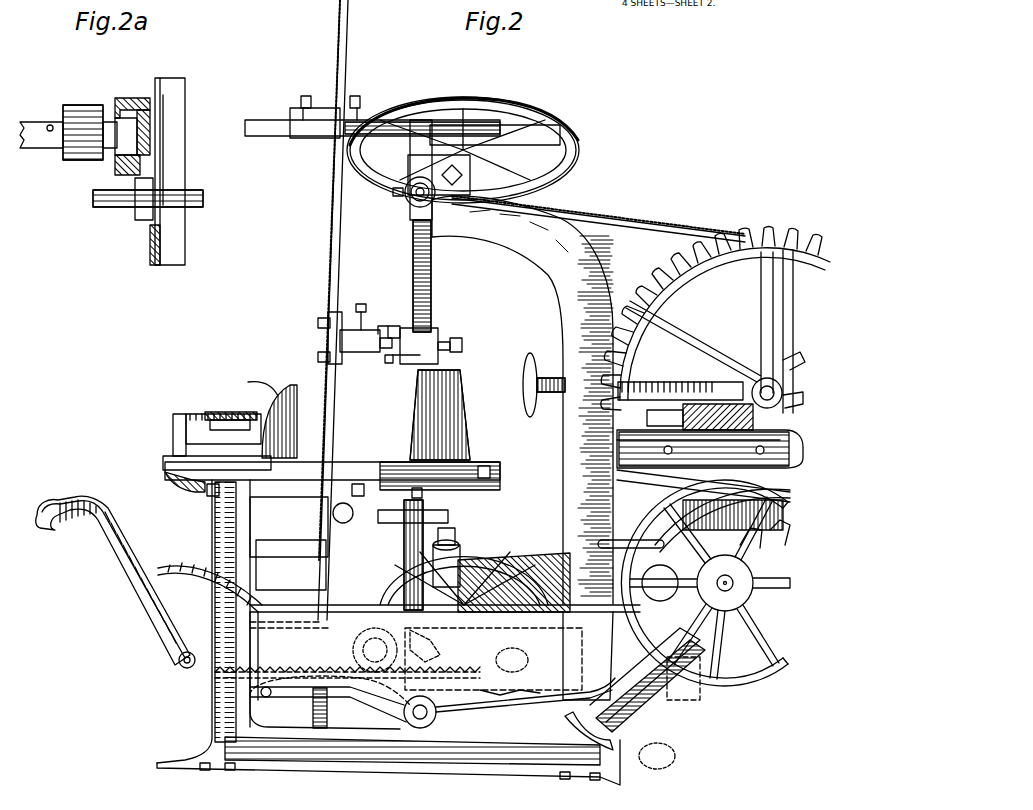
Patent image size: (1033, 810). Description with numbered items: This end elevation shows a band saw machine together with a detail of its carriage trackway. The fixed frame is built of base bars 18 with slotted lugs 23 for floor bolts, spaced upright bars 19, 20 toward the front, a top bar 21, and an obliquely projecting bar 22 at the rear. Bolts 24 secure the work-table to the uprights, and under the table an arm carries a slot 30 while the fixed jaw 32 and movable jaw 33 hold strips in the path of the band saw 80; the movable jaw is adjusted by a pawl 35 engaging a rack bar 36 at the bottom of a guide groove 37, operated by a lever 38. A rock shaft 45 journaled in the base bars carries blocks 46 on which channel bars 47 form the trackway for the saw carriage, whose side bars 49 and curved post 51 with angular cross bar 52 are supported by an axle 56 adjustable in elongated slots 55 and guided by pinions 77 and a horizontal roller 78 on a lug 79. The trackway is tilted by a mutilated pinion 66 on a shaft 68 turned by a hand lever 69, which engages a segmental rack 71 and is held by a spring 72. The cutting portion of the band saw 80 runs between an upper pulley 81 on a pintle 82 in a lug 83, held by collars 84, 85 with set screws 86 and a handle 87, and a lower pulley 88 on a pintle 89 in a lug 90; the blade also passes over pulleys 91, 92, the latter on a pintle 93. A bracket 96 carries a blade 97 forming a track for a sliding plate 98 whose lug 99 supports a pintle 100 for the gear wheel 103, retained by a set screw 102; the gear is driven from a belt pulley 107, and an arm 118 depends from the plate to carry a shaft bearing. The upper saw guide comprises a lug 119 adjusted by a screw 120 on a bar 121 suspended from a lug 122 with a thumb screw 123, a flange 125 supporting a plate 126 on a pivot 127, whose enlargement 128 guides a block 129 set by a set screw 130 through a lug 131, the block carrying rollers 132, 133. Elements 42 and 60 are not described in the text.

In FIG. 2, the base bars 18 is at (375, 770).
In FIG. 2, the upright bar 19 is at (245, 558).
In FIG. 2, the upright bar 20 is at (320, 548).
In FIG. 2, the top bar 21 is at (301, 527).
In FIG. 2, the obliquely projecting bar 22 is at (650, 705).
In FIG. 2, the slotted lugs 23 is at (245, 770).
In FIG. 2, the bolts 24 is at (208, 492).
In FIG. 2, the slot 30 is at (196, 416).
In FIG. 2, the fixed jaw 32 is at (440, 394).
In FIG. 2, the movable jaw 33 is at (276, 382).
In FIG. 2, the pawl 35 is at (236, 418).
In FIG. 2, the rack bar 36 is at (190, 480).
In FIG. 2, the groove 37 is at (258, 502).
In FIG. 2, the lever 38 is at (173, 444).
In FIG. 2, the plate 42 is at (482, 494).
In FIG. 2, the rock shaft 45 is at (420, 728).
In FIG. 2, the blocks 46 is at (490, 700).
In FIG. 2A, the channel bars 47 is at (168, 110).
In FIG. 2, the channel bars 47 is at (700, 718).
In FIG. 2A, the side bars 49 is at (85, 105).
In FIG. 2, the side bars 49 is at (540, 572).
In FIG. 2, the post 51 is at (556, 296).
In FIG. 2, the angular cross bar 52 is at (470, 246).
In FIG. 2, the elongated slots 55 is at (640, 700).
In FIG. 2, the axle 56 is at (582, 666).
In FIG. 2, the shaft 60 is at (624, 538).
In FIG. 2A, the pinion 66 is at (140, 220).
In FIG. 2A, the shaft 68 is at (115, 207).
In FIG. 2, the hand lever 69 is at (80, 496).
In FIG. 2, the segmental rack 71 is at (186, 565).
In FIG. 2, the spring 72 is at (130, 556).
In FIG. 2, the pinions 77 is at (366, 702).
In FIG. 2, the horizontal roller 78 is at (493, 659).
In FIG. 2, the lug 79 is at (440, 658).
In FIG. 2, the band saw 80 is at (627, 226).
In FIG. 2, the pulley 81 is at (348, 62).
In FIG. 2, the pintle 82 is at (400, 118).
In FIG. 2, the lug 83 is at (465, 124).
In FIG. 2, the collar 84 is at (295, 118).
In FIG. 2, the collar 85 is at (366, 122).
In FIG. 2, the set screws 86 is at (305, 95).
In FIG. 2, the handle 87 is at (262, 130).
In FIG. 2, the pulley 88 is at (313, 712).
In FIG. 2, the pintle 89 is at (490, 565).
In FIG. 2, the lug 90 is at (392, 594).
In FIG. 2, the pulley 91 is at (565, 142).
In FIG. 2, the pulley 92 is at (450, 520).
In FIG. 2, the pintle 93 is at (424, 494).
In FIG. 2, the bracket 96 is at (710, 466).
In FIG. 2, the blade 97 is at (660, 398).
In FIG. 2, the sliding plate 98 is at (698, 404).
In FIG. 2, the lug 99 is at (755, 385).
In FIG. 2, the pintle 100 is at (760, 378).
In FIG. 2, the set screw 102 is at (532, 354).
In FIG. 2, the gear wheel 103 is at (745, 236).
In FIG. 2, the belt pulley 107 is at (768, 648).
In FIG. 2, the arm 118 is at (722, 520).
In FIG. 2, the lug 119 is at (440, 340).
In FIG. 2, the screw 120 is at (462, 348).
In FIG. 2, the bar 121 is at (432, 258).
In FIG. 2, the lug 122 is at (412, 222).
In FIG. 2, the thumb screw 123 is at (404, 198).
In FIG. 2, the flange 125 is at (385, 362).
In FIG. 2, the plate 126 is at (380, 326).
In FIG. 2, the pivot 127 is at (402, 330).
In FIG. 2, the enlargement 128 is at (342, 346).
In FIG. 2, the block 129 is at (392, 194).
In FIG. 2, the set screw 130 is at (360, 304).
In FIG. 2, the lug 131 is at (330, 320).
In FIG. 2, the roller 132 is at (320, 326).
In FIG. 2, the roller 133 is at (320, 360).